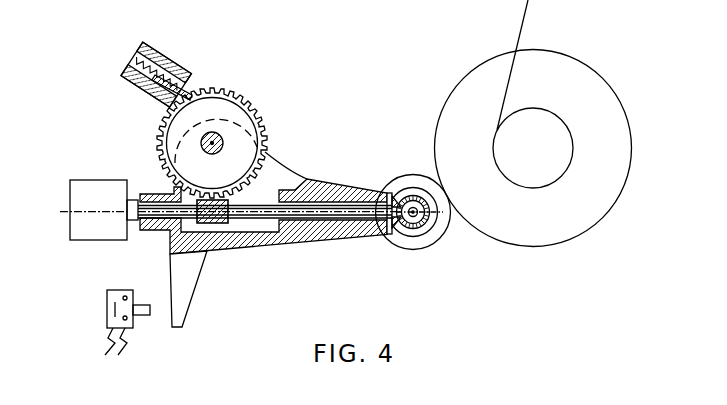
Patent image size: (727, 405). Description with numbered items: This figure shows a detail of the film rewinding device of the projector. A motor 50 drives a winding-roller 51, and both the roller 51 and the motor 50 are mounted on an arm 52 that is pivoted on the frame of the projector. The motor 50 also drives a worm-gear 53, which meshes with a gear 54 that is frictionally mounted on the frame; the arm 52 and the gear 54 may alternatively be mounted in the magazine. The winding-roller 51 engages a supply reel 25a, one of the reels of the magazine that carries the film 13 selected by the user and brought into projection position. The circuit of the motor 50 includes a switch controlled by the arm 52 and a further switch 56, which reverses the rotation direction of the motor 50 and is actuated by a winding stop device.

The film 13 is at (523, 23).
The supply reel 25a is at (610, 85).
The motor 50 is at (97, 177).
The winding-roller 51 is at (425, 249).
The arm 52 is at (340, 243).
The worm-gear 53 is at (213, 220).
The gear 54 is at (259, 111).
The switch 56 is at (132, 328).